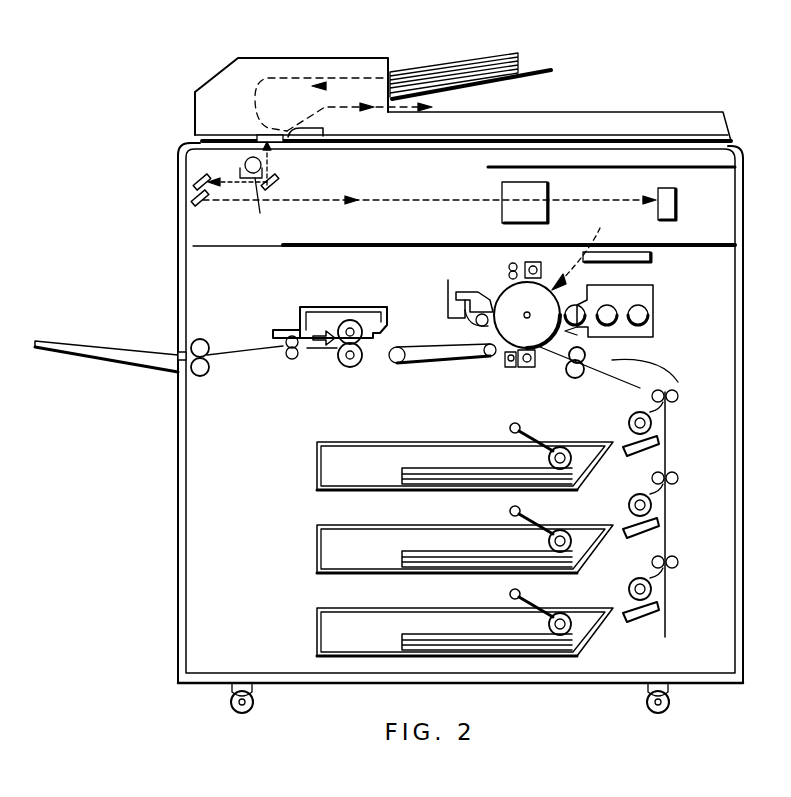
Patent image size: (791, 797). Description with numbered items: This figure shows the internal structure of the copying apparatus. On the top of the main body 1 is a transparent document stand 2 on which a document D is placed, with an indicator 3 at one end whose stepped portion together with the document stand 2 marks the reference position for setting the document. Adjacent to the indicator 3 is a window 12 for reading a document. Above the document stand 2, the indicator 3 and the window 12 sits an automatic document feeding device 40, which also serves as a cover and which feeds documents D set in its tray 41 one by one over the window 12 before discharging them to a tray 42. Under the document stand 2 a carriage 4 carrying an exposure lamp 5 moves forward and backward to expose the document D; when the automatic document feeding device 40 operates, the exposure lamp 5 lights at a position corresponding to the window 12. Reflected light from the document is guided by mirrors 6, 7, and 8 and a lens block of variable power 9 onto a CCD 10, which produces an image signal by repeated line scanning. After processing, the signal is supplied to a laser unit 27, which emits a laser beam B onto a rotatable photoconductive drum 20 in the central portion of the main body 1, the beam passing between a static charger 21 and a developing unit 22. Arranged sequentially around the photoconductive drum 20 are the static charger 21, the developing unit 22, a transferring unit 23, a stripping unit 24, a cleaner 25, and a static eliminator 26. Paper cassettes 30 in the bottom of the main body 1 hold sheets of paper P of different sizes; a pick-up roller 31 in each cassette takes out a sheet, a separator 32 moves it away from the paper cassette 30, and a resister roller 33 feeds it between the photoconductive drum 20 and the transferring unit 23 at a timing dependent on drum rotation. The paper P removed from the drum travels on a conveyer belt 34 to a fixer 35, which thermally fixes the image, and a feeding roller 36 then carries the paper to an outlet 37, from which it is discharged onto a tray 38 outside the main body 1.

The main body 1 is at (745, 200).
The document stand 2 is at (480, 148).
The indicator 3 is at (323, 126).
The carriage 4 is at (252, 203).
The exposure lamp 5 is at (264, 168).
The mirror 6 is at (279, 185).
The mirror 7 is at (195, 180).
The mirror 8 is at (204, 205).
The lens block of variable power 9 is at (549, 190).
The CCD 10 is at (677, 210).
The window 12 is at (287, 146).
The photoconductive drum 20 is at (510, 286).
The static charger 21 is at (542, 260).
The developing unit 22 is at (637, 283).
The transferring unit 23 is at (530, 368).
The stripping unit 24 is at (506, 368).
The cleaner 25 is at (448, 292).
The static eliminator 26 is at (506, 263).
The laser unit 27 is at (654, 255).
The paper cassette 30 is at (316, 458).
The pick-up roller 31 is at (572, 443).
The separator 32 is at (638, 412).
The resister roller 33 is at (581, 380).
The conveyer belt 34 is at (419, 344).
The fixer 35 is at (338, 305).
The feeding roller 36 is at (200, 335).
The outlet 37 is at (187, 380).
The tray 38 is at (96, 364).
The automatic document feeding device 40 is at (333, 59).
The tray 41 is at (543, 69).
The tray 42 is at (633, 113).
The document D is at (477, 53).
The laser beam B is at (582, 247).
The paper P is at (412, 466).